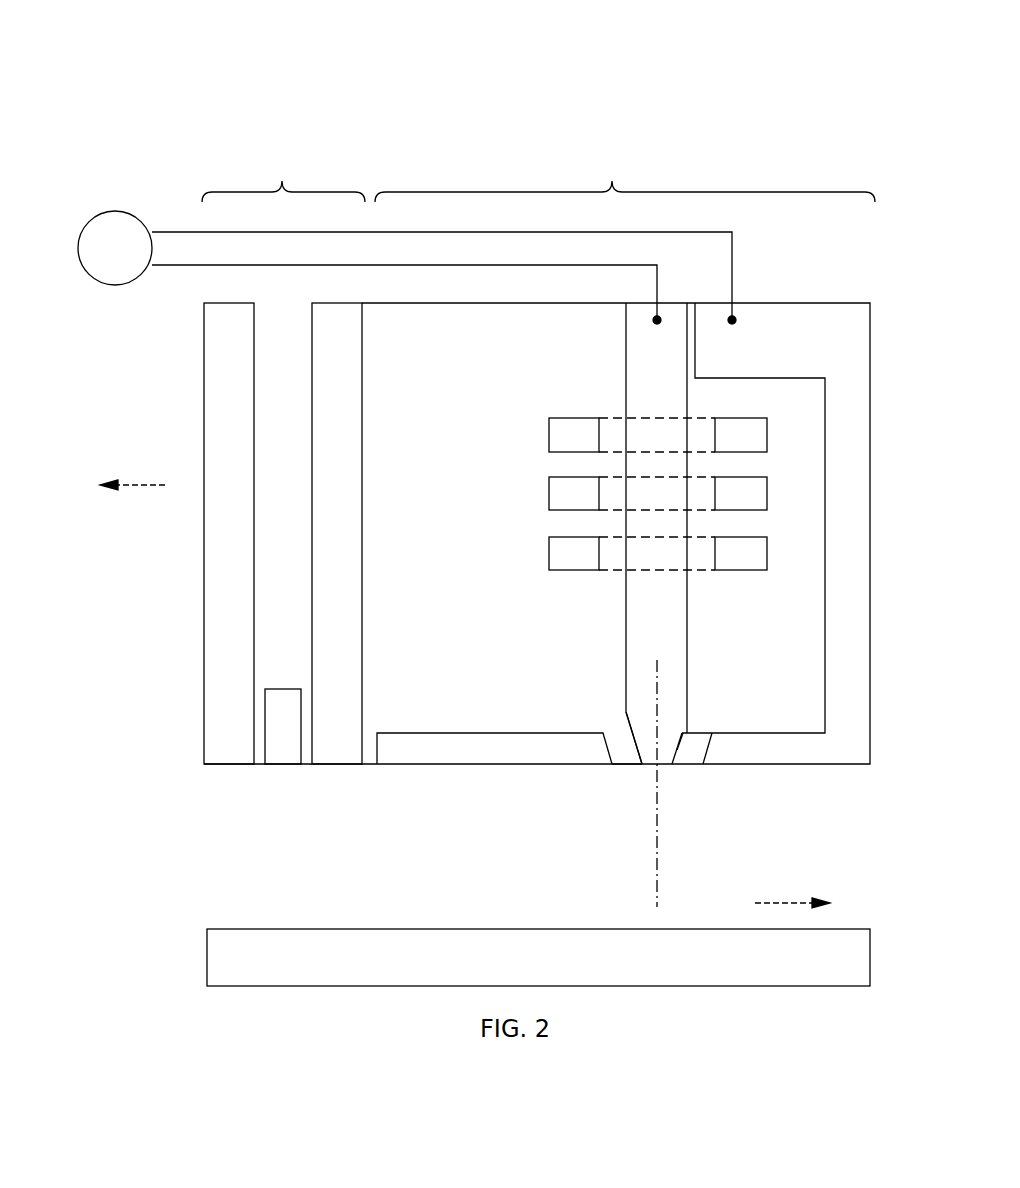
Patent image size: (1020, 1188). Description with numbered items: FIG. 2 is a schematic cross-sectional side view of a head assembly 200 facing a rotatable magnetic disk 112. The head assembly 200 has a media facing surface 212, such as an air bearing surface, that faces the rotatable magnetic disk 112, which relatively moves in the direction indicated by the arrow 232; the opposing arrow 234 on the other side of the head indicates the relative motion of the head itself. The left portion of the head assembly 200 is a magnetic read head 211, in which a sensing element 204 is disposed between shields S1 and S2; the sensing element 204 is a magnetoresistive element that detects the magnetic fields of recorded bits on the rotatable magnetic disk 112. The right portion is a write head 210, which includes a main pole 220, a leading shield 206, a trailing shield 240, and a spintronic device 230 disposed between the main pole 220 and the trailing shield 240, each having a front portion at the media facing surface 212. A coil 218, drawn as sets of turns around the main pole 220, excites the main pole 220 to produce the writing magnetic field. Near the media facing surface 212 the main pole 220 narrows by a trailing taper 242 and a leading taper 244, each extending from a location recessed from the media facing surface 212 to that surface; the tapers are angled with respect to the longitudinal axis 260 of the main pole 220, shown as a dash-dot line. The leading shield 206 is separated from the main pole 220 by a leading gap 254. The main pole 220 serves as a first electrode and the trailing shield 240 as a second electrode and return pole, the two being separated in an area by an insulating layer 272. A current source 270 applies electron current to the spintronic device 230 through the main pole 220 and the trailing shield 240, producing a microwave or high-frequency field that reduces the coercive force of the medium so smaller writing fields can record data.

The head assembly 200 is at (144, 60).
The current source 270 is at (116, 212).
The insulating layer 272 is at (695, 308).
The magnetic read head 211 is at (283, 172).
The write head 210 is at (625, 172).
The shield S1 is at (223, 766).
The sensing element 204 is at (281, 766).
The shield S2 is at (335, 766).
The leading shield 206 is at (430, 766).
The media facing surface 212 is at (780, 767).
The main pole 220 is at (668, 626).
The trailing shield 240 is at (848, 767).
The spintronic device 230 is at (692, 753).
The trailing taper 242 is at (678, 733).
The coil 218 is at (572, 571).
The leading taper 244 is at (627, 738).
The leading gap 254 is at (627, 757).
The longitudinal axis 260 is at (655, 867).
The arrow 232 is at (782, 903).
The leading direction 234 is at (150, 483).
The rotatable magnetic disk 112 is at (820, 988).